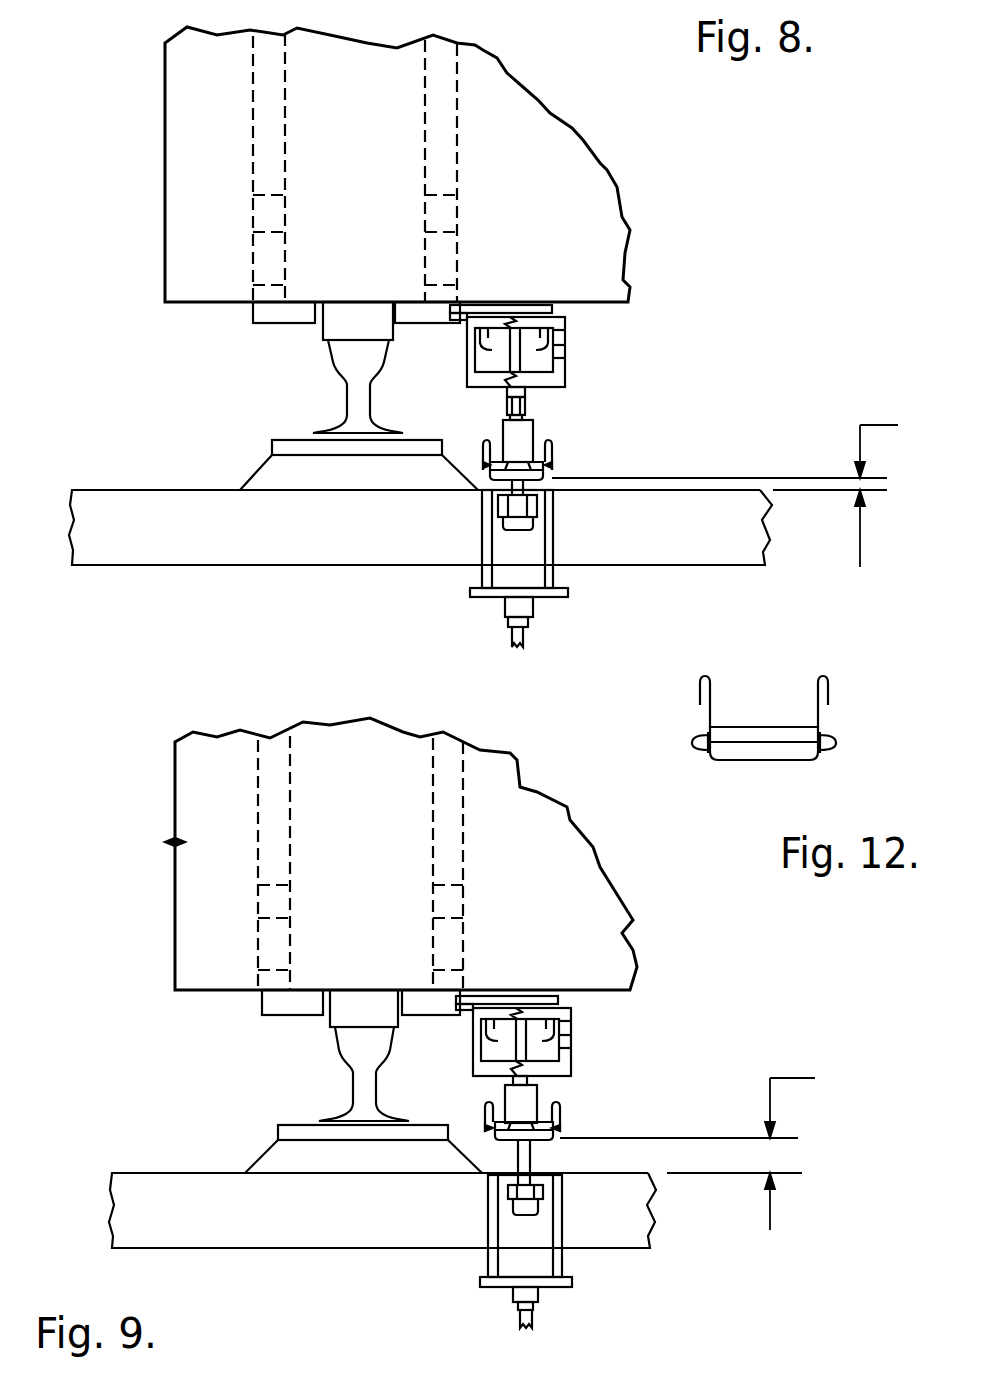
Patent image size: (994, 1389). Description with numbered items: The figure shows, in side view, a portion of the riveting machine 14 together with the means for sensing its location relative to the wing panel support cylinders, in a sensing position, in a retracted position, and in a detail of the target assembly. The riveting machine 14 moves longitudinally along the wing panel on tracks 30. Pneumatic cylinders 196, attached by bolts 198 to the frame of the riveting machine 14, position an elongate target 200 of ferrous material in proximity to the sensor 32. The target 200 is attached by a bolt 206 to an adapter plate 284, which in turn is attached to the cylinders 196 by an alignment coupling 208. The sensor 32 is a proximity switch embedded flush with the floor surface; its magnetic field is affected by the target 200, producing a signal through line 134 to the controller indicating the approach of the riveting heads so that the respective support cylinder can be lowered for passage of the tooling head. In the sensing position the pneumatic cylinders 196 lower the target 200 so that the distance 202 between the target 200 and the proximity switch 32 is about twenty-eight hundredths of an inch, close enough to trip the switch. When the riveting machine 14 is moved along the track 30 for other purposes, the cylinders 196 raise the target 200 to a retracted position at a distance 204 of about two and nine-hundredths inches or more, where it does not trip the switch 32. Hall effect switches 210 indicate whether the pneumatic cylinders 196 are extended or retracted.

In FIG. 8, the riveting machine 14 is at (497, 88).
In FIG. 9, the riveting machine 14 is at (212, 752).
In FIG. 8, the track 30 is at (343, 386).
In FIG. 9, the track 30 is at (350, 1078).
In FIG. 8, the sensor 32 is at (512, 527).
In FIG. 9, the sensor 32 is at (513, 1207).
In FIG. 8, the line 134 is at (512, 637).
In FIG. 9, the line 134 is at (520, 1318).
In FIG. 8, the pneumatic cylinder 196 is at (565, 318).
In FIG. 9, the pneumatic cylinder 196 is at (571, 1008).
In FIG. 8, the bolt 198 is at (477, 343).
In FIG. 9, the bolt 198 is at (483, 1040).
In FIG. 8, the target 200 is at (490, 478).
In FIG. 9, the target 200 is at (495, 1138).
In FIG. 12, the target 200 is at (740, 762).
In FIG. 8, the distance 202 is at (898, 425).
In FIG. 9, the distance 204 is at (815, 1078).
In FIG. 8, the bolt 206 is at (552, 466).
In FIG. 9, the bolt 206 is at (560, 1129).
In FIG. 12, the bolt 206 is at (838, 740).
In FIG. 8, the alignment coupling 208 is at (535, 435).
In FIG. 9, the alignment coupling 208 is at (538, 1096).
In FIG. 8, the hall effect switch 210 is at (567, 330).
In FIG. 9, the hall effect switch 210 is at (573, 1022).
In FIG. 12, the adapter plate 284 is at (765, 727).